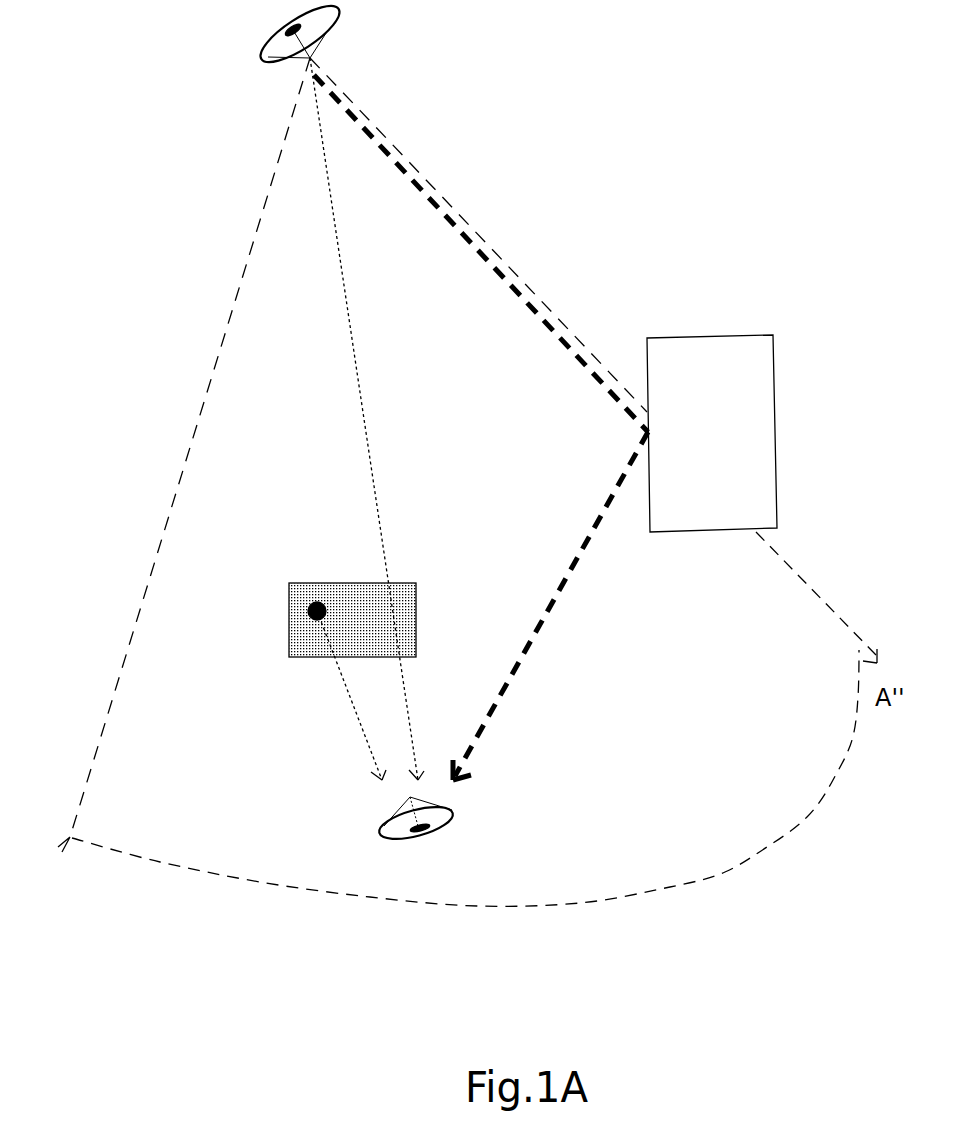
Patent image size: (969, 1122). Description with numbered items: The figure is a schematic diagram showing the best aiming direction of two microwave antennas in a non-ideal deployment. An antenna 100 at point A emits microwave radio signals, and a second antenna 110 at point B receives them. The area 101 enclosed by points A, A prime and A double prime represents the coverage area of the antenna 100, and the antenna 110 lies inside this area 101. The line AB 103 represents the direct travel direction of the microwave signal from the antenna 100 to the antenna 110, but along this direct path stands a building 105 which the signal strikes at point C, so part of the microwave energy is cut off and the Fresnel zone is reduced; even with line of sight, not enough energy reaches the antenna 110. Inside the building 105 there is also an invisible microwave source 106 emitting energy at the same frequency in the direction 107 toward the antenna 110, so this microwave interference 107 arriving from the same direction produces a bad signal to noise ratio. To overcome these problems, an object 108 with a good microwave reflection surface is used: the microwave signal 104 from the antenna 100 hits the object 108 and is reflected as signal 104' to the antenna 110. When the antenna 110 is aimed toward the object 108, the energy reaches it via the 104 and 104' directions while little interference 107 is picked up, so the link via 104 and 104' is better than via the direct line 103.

The antenna 100 is at (322, 40).
The area 101 is at (217, 412).
The line AB 103 is at (370, 425).
The microwave signal 104 is at (479, 245).
The reflected microwave signal 104' is at (558, 606).
The building 105 is at (416, 600).
The invisible microwave source 106 is at (308, 611).
The microwave interference 107 is at (340, 672).
The object 108 is at (777, 409).
The antenna 110 is at (445, 812).